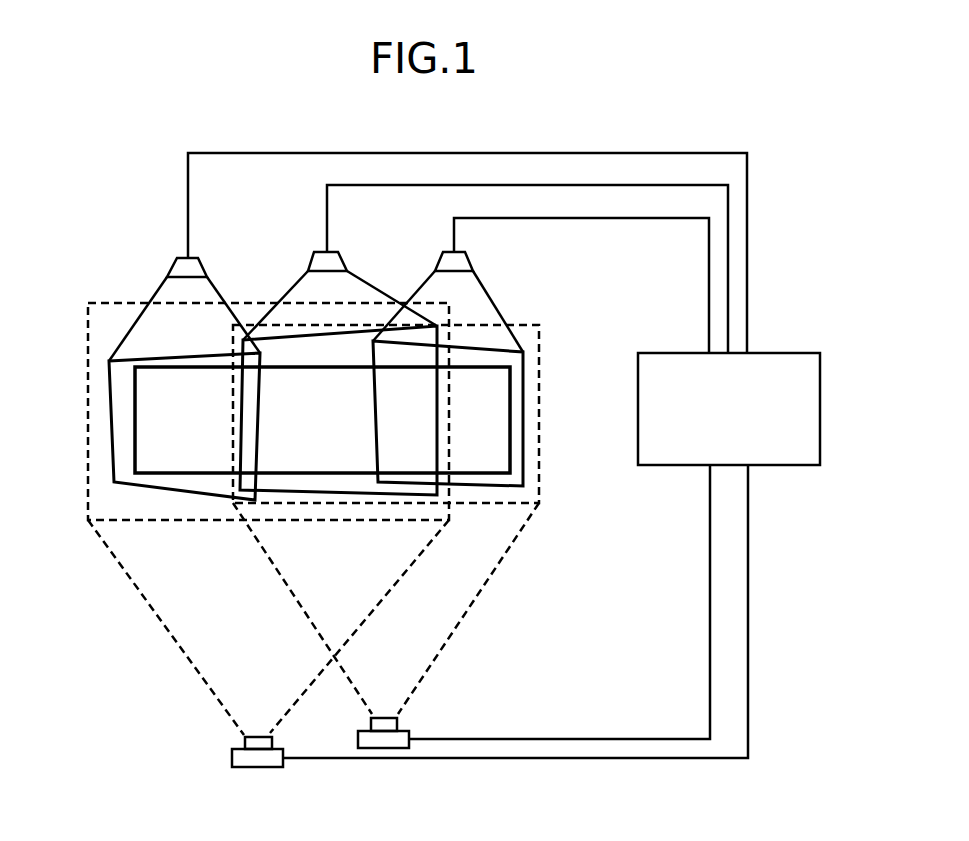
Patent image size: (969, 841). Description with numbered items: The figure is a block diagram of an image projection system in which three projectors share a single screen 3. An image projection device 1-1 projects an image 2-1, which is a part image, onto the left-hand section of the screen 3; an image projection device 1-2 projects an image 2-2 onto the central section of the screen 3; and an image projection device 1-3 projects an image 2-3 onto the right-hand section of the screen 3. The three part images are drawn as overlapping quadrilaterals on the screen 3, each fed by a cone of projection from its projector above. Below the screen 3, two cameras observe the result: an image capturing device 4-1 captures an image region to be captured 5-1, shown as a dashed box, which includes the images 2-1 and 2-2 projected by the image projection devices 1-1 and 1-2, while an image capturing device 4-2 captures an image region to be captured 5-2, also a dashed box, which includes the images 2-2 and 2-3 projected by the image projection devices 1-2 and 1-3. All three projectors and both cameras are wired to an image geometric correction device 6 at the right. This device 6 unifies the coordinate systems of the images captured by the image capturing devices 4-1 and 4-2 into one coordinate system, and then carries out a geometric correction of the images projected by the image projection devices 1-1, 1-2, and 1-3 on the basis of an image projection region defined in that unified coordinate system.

The image projection device 1-1 is at (201, 262).
The image projection device 1-2 is at (342, 257).
The image projection device 1-3 is at (468, 257).
The image 2-1 is at (110, 423).
The image 2-2 is at (332, 495).
The image 2-3 is at (523, 380).
The screen 3 is at (510, 432).
The image capturing device 4-1 is at (262, 767).
The image capturing device 4-2 is at (409, 731).
The image region to be captured 5-1 is at (180, 520).
The image region to be captured 5-2 is at (539, 478).
The image geometric correction device 6 is at (782, 353).